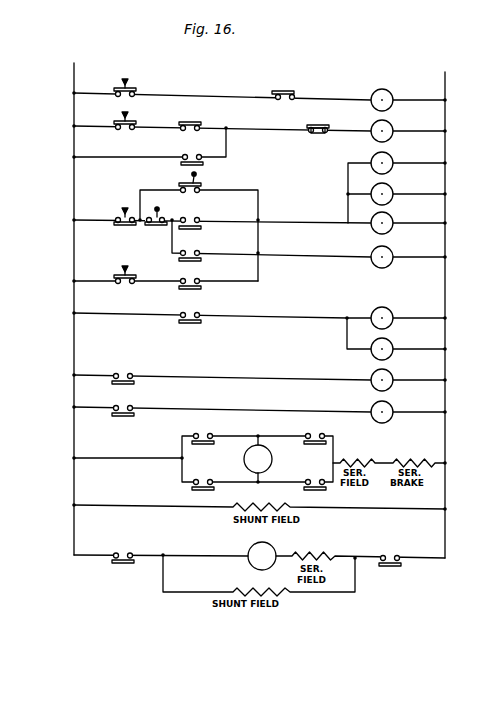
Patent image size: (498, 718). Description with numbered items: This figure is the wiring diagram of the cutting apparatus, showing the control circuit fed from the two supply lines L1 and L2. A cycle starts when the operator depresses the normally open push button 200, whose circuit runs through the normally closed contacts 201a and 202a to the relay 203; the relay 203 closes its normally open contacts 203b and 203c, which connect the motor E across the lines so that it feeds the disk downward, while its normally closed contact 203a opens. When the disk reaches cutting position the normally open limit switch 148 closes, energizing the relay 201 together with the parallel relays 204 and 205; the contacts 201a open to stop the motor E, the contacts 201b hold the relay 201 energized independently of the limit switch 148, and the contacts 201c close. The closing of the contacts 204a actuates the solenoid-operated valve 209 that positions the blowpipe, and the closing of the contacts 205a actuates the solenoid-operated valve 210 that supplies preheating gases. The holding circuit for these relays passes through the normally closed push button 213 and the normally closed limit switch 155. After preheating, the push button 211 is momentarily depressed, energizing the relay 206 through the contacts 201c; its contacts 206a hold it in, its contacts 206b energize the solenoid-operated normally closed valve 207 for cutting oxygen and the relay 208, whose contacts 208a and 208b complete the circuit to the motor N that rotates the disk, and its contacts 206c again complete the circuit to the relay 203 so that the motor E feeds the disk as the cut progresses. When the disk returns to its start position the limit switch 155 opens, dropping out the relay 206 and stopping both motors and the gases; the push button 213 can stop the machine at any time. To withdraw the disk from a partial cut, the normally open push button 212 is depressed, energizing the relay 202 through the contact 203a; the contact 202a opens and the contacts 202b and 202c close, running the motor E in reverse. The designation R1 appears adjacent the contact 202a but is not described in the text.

The line L1 is at (77, 297).
The line L2 is at (443, 301).
The normally open push button 212 is at (142, 74).
The normally open push button 200 is at (129, 120).
The normally closed push button 213 is at (124, 212).
The push button 211 is at (123, 270).
The normally closed limit switch 155 is at (159, 210).
The normally open limit switch 148 is at (192, 176).
The contact of relay 203 203a is at (298, 80).
The contact of relay 201 201a is at (198, 122).
The contact of relay 202 202a is at (322, 115).
The resistor R1 is at (314, 142).
The contact of relay 206 206c is at (197, 160).
The contact of relay 201 201b is at (200, 229).
The contact of relay 206 206a is at (186, 261).
The contact of relay 201 201c is at (195, 290).
The contact of relay 206 206b is at (195, 324).
The contact of relay 204 204a is at (128, 385).
The contact of relay 205 205a is at (124, 416).
The contact of relay 203 203b is at (204, 444).
The contact of relay 202 202b is at (198, 490).
The contact of relay 202 202c is at (318, 444).
The contact of relay 203 203c is at (318, 490).
The contact of relay 208 208a is at (124, 563).
The contact of relay 208 208b is at (390, 566).
The relay 202 is at (384, 92).
The relay 203 is at (390, 124).
The relay 204 is at (390, 155).
The relay 205 is at (390, 186).
The relay 201 is at (390, 215).
The relay 206 is at (390, 249).
The solenoid-operated normally closed valve 207 is at (390, 310).
The relay 208 is at (390, 341).
The solenoid-operated valve 209 is at (390, 372).
The solenoid-operated valve 210 is at (390, 404).
The motor E is at (266, 448).
The motor N is at (272, 547).